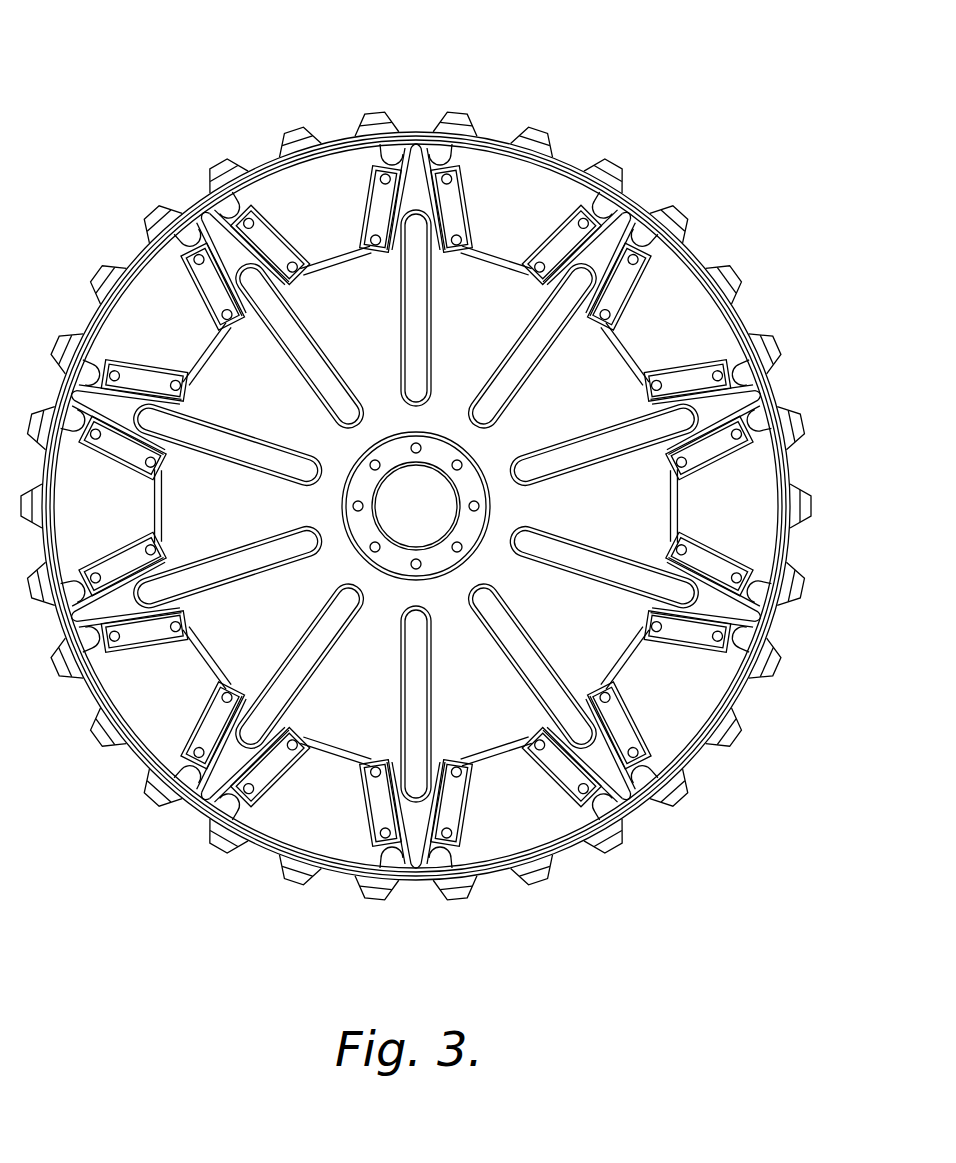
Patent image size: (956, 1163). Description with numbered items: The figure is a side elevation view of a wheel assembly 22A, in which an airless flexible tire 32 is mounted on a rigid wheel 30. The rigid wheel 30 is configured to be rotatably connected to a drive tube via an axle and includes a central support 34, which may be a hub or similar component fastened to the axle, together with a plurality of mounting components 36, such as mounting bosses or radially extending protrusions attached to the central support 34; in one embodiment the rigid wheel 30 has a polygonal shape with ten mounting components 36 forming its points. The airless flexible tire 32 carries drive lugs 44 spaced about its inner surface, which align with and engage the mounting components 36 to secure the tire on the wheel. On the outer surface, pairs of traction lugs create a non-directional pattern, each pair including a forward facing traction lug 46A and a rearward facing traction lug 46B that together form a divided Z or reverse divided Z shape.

The wheel assembly 22A is at (238, 78).
The rigid wheel 30 is at (456, 484).
The airless flexible tire 32 is at (443, 506).
The central support 34 is at (356, 506).
The mounting components 36 is at (517, 196).
The drive lugs 44 is at (747, 726).
The forward facing traction lug 46A is at (602, 890).
The rearward facing traction lug 46B is at (507, 927).